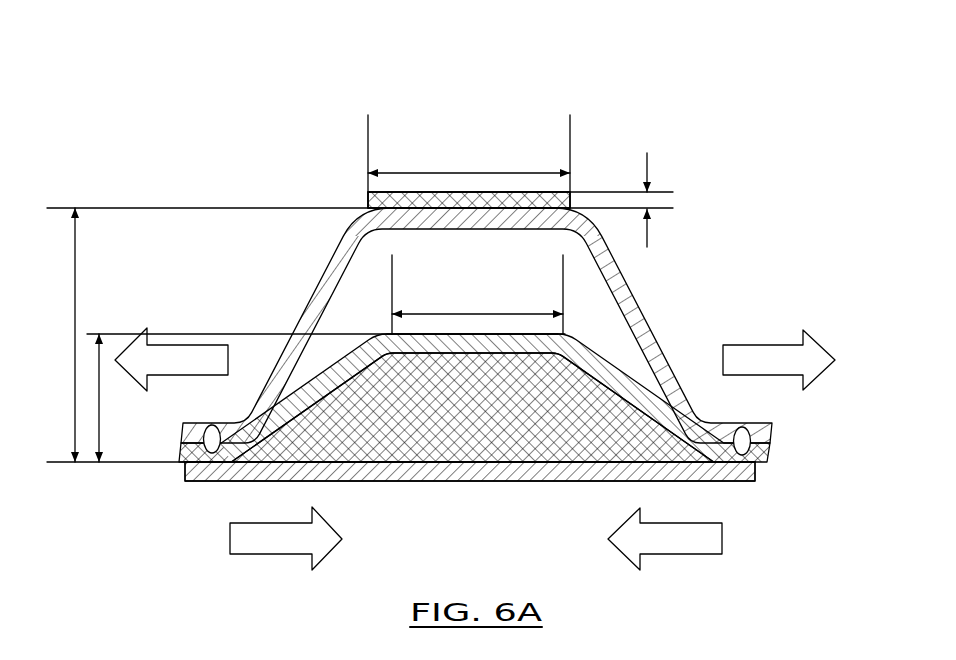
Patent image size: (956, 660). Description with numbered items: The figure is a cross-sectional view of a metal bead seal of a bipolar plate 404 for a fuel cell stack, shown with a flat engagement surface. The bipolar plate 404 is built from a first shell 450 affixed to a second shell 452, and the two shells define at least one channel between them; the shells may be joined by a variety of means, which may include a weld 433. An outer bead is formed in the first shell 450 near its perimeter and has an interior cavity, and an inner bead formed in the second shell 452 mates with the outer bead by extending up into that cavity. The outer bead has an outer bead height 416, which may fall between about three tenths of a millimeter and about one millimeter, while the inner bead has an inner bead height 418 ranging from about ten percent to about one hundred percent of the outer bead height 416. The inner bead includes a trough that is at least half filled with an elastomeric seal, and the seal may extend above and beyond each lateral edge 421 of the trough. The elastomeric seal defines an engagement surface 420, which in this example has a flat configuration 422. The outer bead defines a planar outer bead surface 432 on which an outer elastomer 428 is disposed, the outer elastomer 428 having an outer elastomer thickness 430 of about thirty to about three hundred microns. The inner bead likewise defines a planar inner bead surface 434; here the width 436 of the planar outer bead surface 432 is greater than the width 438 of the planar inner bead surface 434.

The bipolar plate 404 is at (731, 272).
The outer bead height 416 is at (76, 268).
The inner bead height 418 is at (100, 425).
The engagement surface 420 is at (410, 468).
The lateral edge 421 is at (256, 464).
The flat configuration 422 is at (470, 471).
The outer elastomer 428 is at (500, 203).
The outer elastomer thickness 430 is at (647, 160).
The planar outer bead surface 432 is at (421, 203).
The weld 433 is at (210, 456).
The planar inner bead surface 434 is at (499, 332).
The width of the planar outer bead surface 436 is at (469, 172).
The width of the planar inner bead surface 438 is at (446, 312).
The first shell 450 is at (238, 431).
The second shell 452 is at (200, 458).